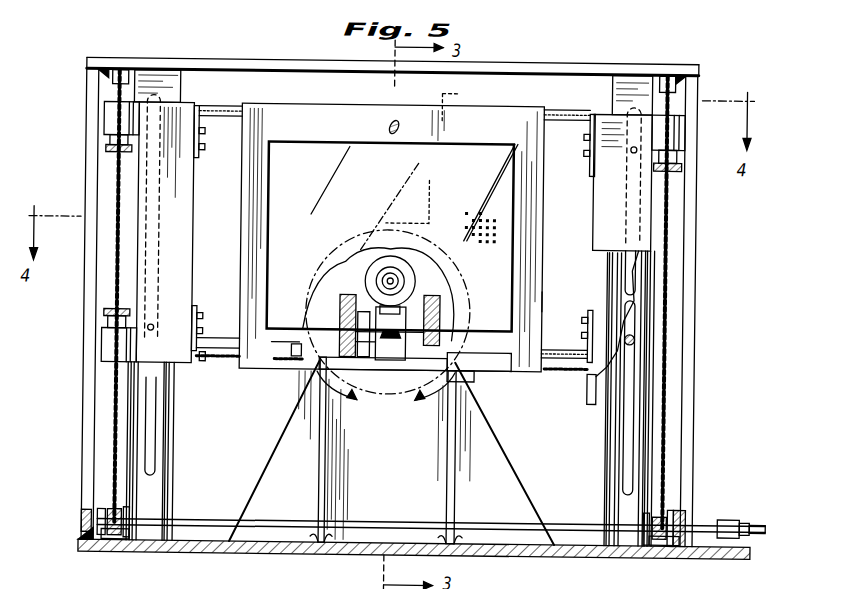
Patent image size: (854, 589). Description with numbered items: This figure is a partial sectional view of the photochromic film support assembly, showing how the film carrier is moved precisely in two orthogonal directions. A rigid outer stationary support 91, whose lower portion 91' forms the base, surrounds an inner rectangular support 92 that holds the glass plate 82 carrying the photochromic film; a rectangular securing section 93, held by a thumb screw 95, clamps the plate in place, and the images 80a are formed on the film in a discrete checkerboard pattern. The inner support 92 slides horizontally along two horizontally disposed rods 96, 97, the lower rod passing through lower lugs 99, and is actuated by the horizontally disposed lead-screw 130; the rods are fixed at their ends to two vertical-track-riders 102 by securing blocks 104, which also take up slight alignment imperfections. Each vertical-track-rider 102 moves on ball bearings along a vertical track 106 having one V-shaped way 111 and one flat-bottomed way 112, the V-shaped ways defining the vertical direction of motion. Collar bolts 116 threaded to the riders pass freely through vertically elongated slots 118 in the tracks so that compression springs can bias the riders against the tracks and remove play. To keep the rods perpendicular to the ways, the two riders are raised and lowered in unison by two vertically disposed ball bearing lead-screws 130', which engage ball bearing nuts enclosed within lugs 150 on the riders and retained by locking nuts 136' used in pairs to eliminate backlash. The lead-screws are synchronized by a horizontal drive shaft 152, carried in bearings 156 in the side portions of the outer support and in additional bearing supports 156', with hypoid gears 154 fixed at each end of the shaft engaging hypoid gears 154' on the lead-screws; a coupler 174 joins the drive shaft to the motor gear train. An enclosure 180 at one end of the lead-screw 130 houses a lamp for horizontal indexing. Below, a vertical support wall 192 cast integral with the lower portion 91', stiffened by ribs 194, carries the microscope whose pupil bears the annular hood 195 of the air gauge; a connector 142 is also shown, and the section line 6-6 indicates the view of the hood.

The outer stationary support 91 is at (376, 307).
The lower portion of outer stationary support 91' is at (414, 556).
The vertically disposed ball bearing lead-screw 130' is at (392, 299).
The lug 150 is at (102, 114).
The locking nut 136' is at (390, 231).
The vertical-track-rider 102 is at (190, 180).
The securing block 104 is at (197, 150).
The chain connector 142 is at (204, 366).
The glass plate 82 is at (303, 193).
The thumb screw 95 is at (390, 118).
The horizontally disposed rod 96 is at (548, 108).
The rectangular securing section 93 is at (542, 300).
The image 80a is at (463, 228).
The annular hood 195 is at (366, 274).
The section line 6-6 is at (388, 322).
The vertical support wall 192 is at (407, 467).
The stiffening rib 194 is at (321, 502).
The inner rectangular support 92 is at (504, 372).
The lower lug 99 is at (474, 372).
The horizontally disposed rod 97 is at (544, 350).
The vertical track 106 is at (173, 431).
The vertically elongated slot 118 is at (151, 418).
The V-shaped way 111 is at (128, 412).
The flat-bottomed way 112 is at (165, 455).
The collar bolt 116 is at (635, 338).
The horizontally disposed lead-screw 130 is at (566, 383).
The enclosure 180 is at (594, 392).
The horizontal drive shaft 152 is at (182, 522).
The bearing 156 is at (379, 521).
The hypoid gear 154 is at (101, 541).
The additional bearing support 156' is at (393, 546).
The hypoid gear 154' is at (696, 517).
The coupler 174 is at (729, 518).